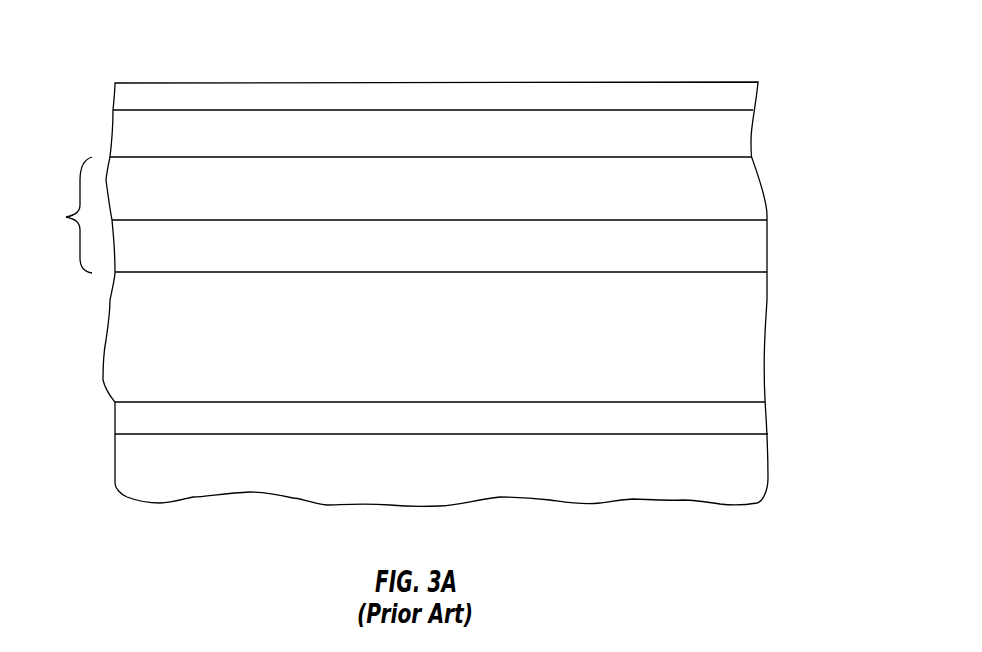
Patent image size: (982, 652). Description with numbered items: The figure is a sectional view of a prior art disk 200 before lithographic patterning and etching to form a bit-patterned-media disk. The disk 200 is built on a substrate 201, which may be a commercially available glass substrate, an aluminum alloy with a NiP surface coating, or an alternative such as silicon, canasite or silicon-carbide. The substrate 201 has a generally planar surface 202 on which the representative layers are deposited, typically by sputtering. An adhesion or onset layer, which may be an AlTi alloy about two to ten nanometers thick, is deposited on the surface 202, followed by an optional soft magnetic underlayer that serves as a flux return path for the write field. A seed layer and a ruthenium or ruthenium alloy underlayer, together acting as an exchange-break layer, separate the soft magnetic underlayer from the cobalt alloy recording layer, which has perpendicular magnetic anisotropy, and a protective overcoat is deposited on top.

The disk 200 is at (433, 260).
The substrate 201 is at (755, 463).
The substrate surface 202 is at (743, 433).